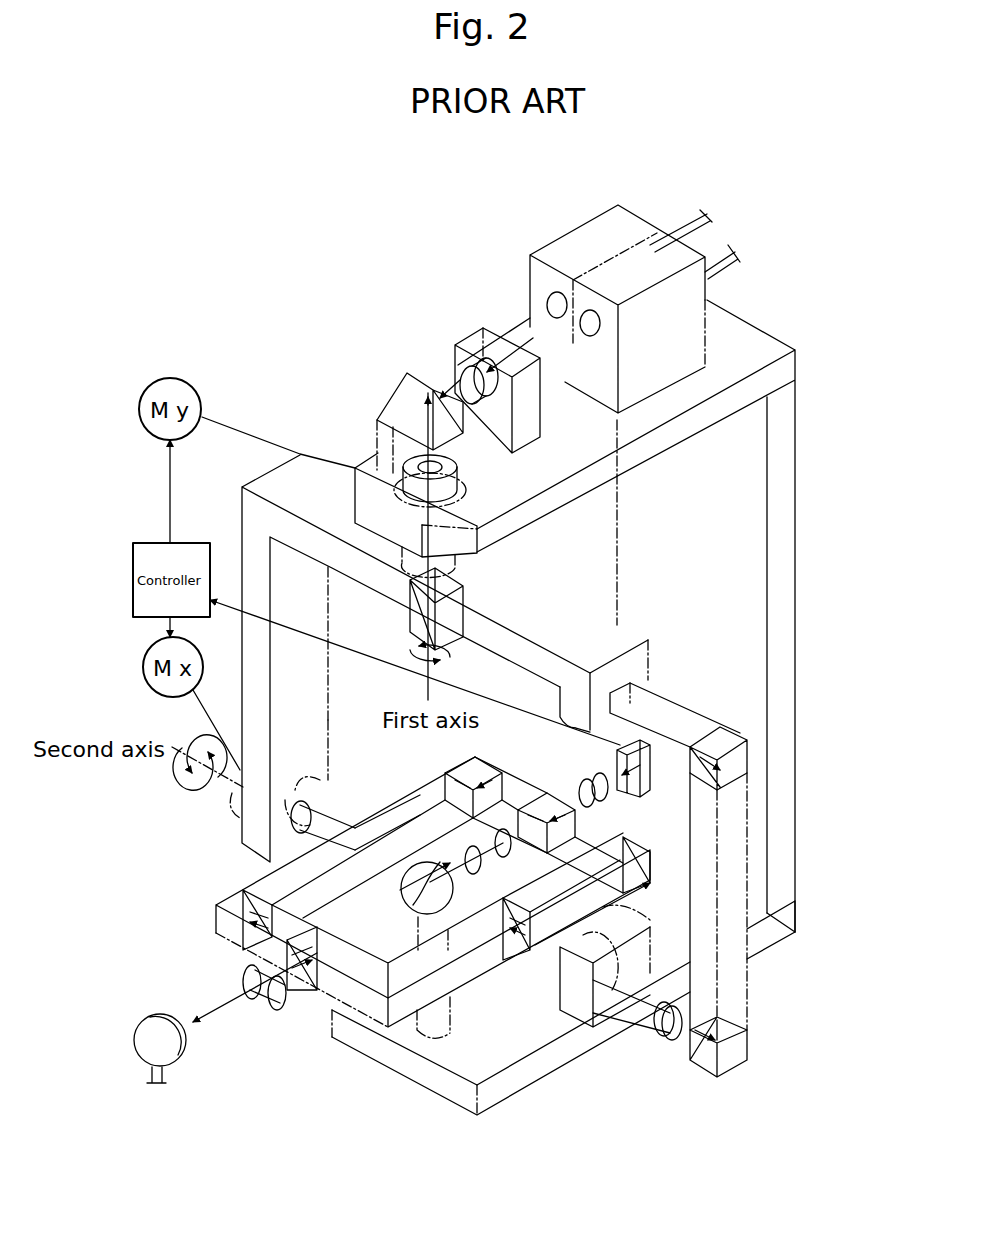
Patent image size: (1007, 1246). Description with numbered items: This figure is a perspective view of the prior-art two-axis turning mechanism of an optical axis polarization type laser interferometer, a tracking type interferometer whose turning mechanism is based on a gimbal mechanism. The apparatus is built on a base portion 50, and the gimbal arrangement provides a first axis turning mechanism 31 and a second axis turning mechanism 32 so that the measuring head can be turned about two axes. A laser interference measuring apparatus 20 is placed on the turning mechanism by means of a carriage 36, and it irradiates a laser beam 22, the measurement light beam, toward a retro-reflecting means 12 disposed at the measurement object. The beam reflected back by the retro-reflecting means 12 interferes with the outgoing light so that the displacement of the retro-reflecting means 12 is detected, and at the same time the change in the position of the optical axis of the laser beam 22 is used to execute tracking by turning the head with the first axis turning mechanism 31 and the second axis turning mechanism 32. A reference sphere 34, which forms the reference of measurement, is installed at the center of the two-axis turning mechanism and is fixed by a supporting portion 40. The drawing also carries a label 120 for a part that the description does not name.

The retro-reflecting means 12 is at (160, 1012).
The laser interference measuring apparatus 20 is at (638, 748).
The laser beam 22 is at (220, 1012).
The first axis turning mechanism 31 is at (265, 470).
The second axis turning mechanism 32 is at (218, 860).
The reference sphere 34 is at (407, 908).
The carriage 36 is at (368, 817).
The supporting portion 40 is at (423, 1017).
The base portion 50 is at (802, 691).
The rotary mirror 120 is at (330, 717).